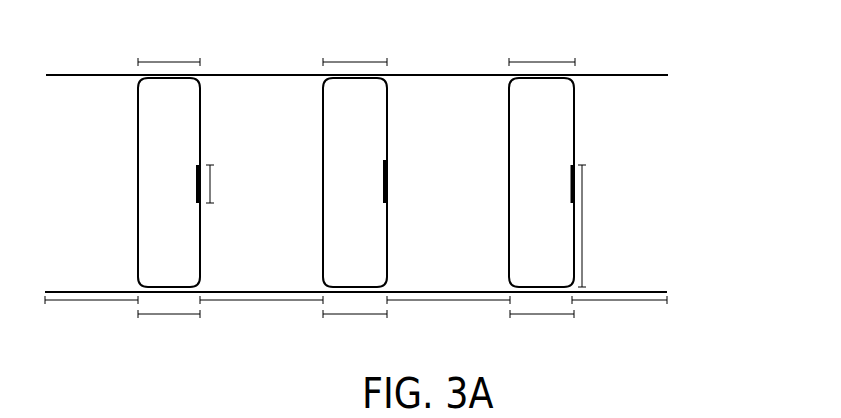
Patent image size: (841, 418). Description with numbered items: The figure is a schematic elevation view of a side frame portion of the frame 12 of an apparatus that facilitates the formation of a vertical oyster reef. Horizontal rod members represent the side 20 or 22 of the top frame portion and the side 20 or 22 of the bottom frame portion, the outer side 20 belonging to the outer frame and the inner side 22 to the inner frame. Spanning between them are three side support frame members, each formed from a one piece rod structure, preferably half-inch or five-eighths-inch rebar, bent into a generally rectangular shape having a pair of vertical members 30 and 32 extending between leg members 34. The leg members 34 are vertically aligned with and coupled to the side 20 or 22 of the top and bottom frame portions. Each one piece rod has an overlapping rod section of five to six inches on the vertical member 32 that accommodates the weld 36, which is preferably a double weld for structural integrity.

The frame 12 is at (306, 372).
The outer side 20 is at (410, 75).
The inner side 22 is at (618, 292).
The vertical member 30 is at (353, 182).
The vertical member 32 is at (200, 150).
The leg member 34 is at (170, 80).
The weld 36 is at (196, 184).